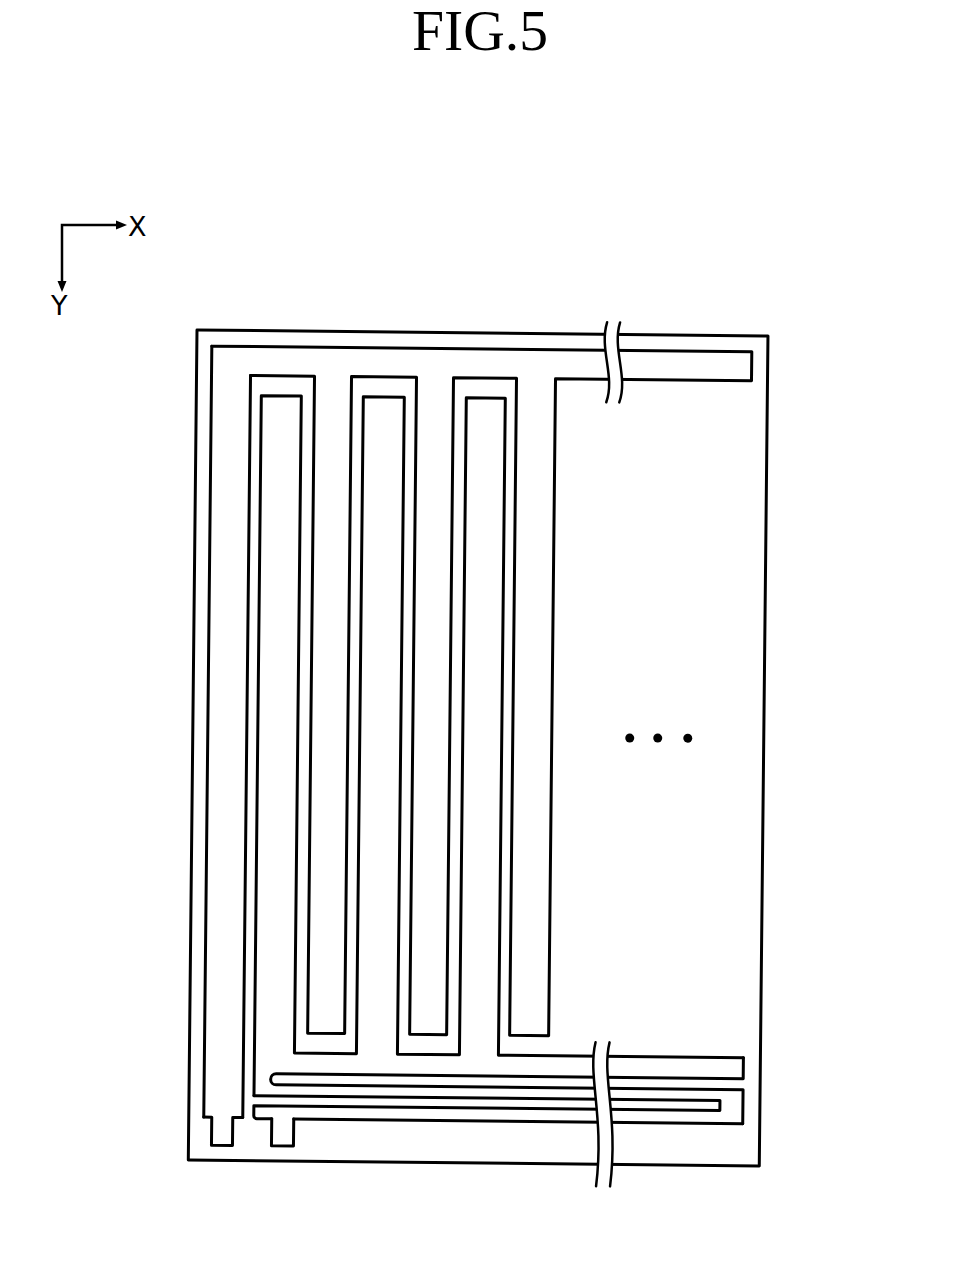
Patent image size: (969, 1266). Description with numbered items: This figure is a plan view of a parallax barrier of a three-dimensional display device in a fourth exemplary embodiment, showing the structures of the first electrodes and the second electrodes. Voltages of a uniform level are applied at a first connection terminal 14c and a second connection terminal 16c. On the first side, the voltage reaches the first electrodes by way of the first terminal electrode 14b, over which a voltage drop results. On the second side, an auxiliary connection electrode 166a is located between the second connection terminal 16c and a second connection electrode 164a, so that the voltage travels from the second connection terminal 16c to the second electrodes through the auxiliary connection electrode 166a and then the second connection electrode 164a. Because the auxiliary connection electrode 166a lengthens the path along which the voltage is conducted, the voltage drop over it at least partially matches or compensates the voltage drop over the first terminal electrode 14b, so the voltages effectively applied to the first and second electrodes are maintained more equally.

The first terminal electrode 14b is at (233, 862).
The first connection terminal 14c is at (233, 1134).
The second connection terminal 16c is at (295, 1134).
The second connection electrode 164a is at (736, 1067).
The auxiliary connection electrode 166a is at (692, 1113).